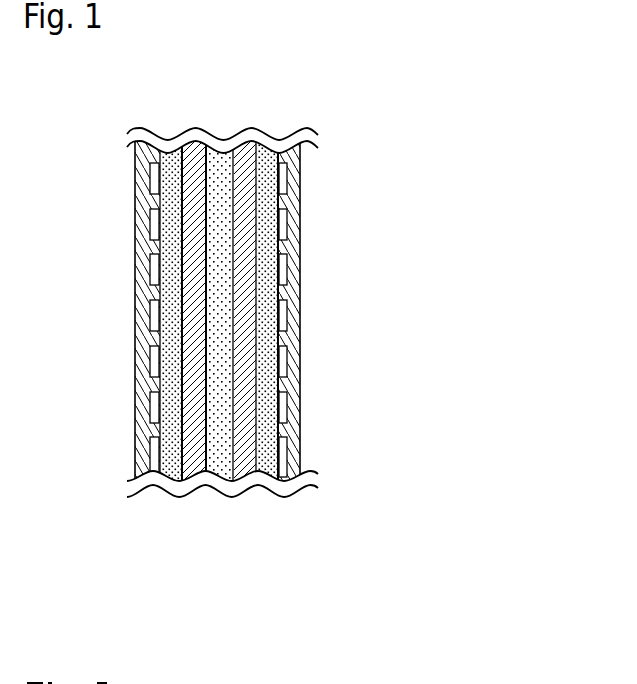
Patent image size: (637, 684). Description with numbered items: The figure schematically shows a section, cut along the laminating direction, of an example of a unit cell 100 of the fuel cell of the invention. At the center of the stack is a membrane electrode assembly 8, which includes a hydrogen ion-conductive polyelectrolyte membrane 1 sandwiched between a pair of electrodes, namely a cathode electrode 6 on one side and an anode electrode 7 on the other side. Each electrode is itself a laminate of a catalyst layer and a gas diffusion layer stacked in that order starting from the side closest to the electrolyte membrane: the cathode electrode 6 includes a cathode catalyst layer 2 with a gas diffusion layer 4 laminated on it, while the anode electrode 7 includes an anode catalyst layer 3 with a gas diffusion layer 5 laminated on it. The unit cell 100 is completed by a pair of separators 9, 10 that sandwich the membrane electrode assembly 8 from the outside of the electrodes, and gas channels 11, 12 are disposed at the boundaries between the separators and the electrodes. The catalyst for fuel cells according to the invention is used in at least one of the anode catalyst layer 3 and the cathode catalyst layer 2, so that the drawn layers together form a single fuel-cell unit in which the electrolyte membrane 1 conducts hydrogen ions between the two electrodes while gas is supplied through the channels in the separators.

The unit cell 100 is at (352, 191).
The polyelectrolyte membrane 1 is at (221, 450).
The cathode catalyst layer 2 is at (243, 453).
The anode catalyst layer 3 is at (193, 453).
The gas diffusion layer 4 is at (266, 458).
The gas diffusion layer 5 is at (175, 452).
The cathode electrode 6 is at (223, 548).
The anode electrode 7 is at (152, 548).
The membrane electrode assembly 8 is at (162, 590).
The separator 9 is at (300, 320).
The separator 10 is at (137, 323).
The gas channel 11 is at (299, 442).
The gas channel 12 is at (146, 458).